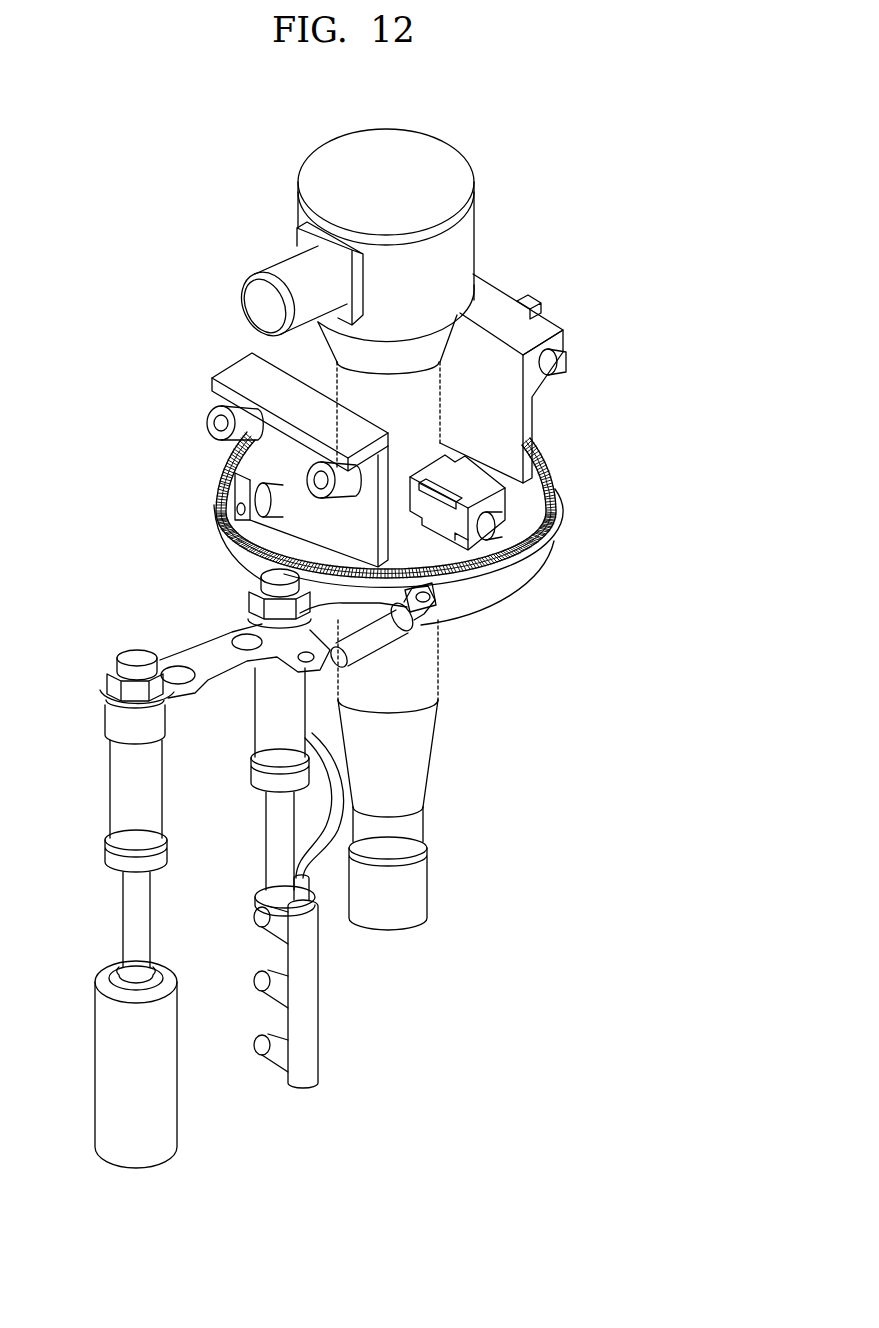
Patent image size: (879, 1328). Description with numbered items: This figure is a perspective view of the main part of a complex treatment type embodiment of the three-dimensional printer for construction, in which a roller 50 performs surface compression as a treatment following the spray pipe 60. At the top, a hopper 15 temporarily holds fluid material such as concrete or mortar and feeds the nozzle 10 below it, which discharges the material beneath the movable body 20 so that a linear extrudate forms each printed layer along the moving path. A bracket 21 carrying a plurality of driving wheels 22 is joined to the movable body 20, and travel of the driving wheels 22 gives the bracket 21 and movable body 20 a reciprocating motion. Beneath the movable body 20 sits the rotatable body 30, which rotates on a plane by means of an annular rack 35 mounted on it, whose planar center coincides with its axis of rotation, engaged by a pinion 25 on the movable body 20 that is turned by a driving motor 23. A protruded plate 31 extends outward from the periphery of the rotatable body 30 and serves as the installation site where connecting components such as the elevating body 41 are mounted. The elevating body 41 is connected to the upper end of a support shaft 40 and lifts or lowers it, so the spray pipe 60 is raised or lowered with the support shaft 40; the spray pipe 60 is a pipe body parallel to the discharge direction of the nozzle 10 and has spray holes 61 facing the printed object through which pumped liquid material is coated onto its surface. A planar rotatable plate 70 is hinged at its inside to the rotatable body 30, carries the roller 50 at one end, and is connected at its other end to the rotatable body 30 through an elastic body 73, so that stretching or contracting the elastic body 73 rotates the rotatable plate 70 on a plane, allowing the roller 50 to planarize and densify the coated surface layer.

The nozzle 10 is at (425, 770).
The hopper 15 is at (463, 245).
The movable body 20 is at (477, 610).
The bracket 21 is at (231, 371).
The driving wheels 22 is at (209, 426).
The driving motor 23 is at (498, 523).
The pinion 25 is at (523, 548).
The rotatable body 30 is at (500, 573).
The protruded plate 31 is at (253, 617).
The annular rack 35 is at (543, 497).
The support shaft 40 is at (123, 915).
The elevating body 41 is at (115, 793).
The roller 50 is at (103, 1070).
The spray pipe 60 is at (293, 910).
The spray holes 61 is at (260, 918).
The rotatable plate 70 is at (187, 653).
The elastic body 73 is at (382, 642).